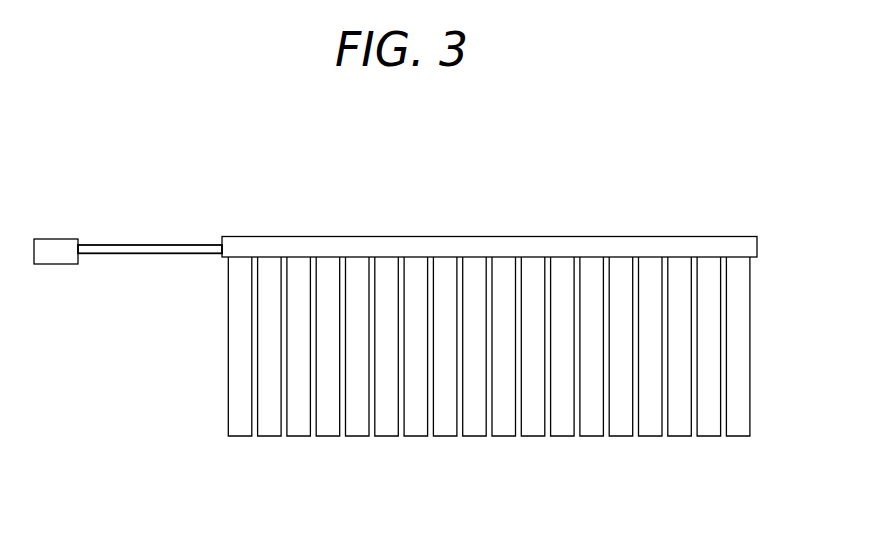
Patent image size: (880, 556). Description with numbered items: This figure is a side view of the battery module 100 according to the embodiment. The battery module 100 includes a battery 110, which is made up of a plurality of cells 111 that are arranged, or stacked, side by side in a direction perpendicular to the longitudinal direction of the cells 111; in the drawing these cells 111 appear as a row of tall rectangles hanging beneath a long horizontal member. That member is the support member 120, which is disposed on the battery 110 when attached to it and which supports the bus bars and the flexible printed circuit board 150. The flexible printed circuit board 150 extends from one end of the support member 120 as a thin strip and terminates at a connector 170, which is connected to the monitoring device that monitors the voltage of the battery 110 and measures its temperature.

The battery module 100 is at (282, 205).
The battery 110 is at (459, 439).
The cell 111 is at (242, 422).
The support member 120 is at (509, 248).
The flexible printed circuit board 150 is at (142, 250).
The connector 170 is at (60, 252).